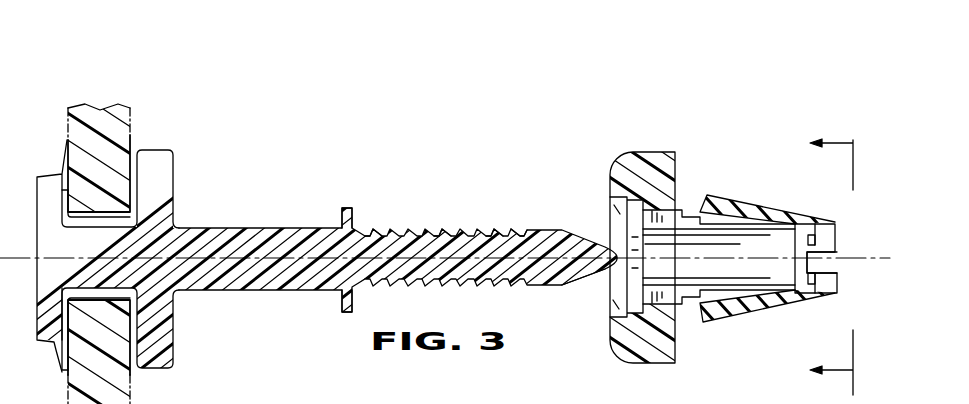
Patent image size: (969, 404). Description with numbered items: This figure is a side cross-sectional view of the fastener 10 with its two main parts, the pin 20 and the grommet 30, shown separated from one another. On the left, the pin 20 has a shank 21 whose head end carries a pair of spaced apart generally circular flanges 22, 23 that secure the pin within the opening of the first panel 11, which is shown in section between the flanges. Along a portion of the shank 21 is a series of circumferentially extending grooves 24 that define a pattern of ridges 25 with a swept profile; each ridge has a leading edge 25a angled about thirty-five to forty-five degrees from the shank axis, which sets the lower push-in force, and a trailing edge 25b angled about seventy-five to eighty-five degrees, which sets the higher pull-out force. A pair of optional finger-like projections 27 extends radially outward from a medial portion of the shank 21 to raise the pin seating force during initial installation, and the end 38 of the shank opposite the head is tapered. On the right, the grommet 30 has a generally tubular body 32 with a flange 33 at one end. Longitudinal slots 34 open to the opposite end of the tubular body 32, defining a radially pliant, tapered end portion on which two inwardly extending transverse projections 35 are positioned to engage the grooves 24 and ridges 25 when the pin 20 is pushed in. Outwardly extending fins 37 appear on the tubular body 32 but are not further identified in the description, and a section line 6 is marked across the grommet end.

The fastener 10 is at (493, 68).
The first panel 11 is at (100, 110).
The pin 20 is at (333, 158).
The shank 21 is at (245, 227).
The flange 22 is at (155, 148).
The flange 23 is at (43, 170).
The grooves 24 is at (373, 229).
The ridges 25 is at (440, 229).
The leading edge 25a is at (520, 235).
The trailing edge 25b is at (490, 229).
The finger-like projections 27 is at (347, 208).
The grommet 30 is at (733, 228).
The tubular body 32 is at (765, 196).
The flange 33 is at (627, 153).
The longitudinal slots 34 is at (828, 263).
The inwardly extending transverse projections 35 is at (836, 238).
The fin 37 is at (715, 197).
The tapered end 38 is at (583, 286).
The section line 6 is at (831, 258).